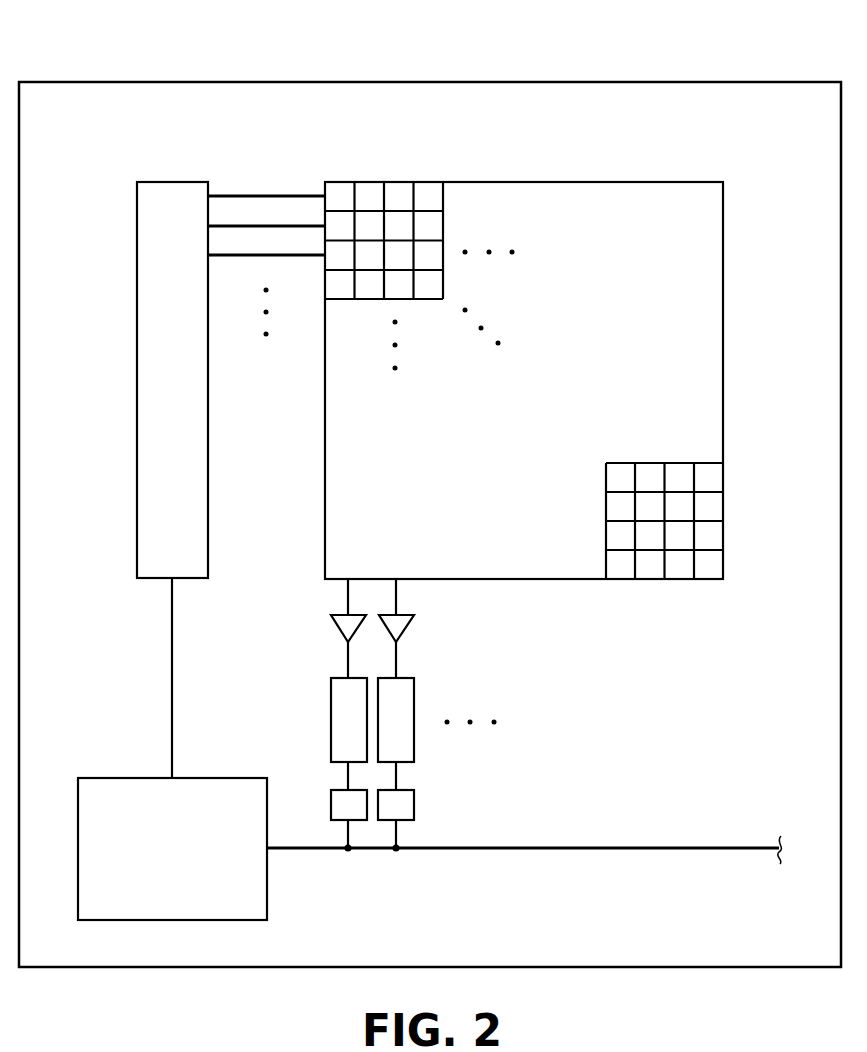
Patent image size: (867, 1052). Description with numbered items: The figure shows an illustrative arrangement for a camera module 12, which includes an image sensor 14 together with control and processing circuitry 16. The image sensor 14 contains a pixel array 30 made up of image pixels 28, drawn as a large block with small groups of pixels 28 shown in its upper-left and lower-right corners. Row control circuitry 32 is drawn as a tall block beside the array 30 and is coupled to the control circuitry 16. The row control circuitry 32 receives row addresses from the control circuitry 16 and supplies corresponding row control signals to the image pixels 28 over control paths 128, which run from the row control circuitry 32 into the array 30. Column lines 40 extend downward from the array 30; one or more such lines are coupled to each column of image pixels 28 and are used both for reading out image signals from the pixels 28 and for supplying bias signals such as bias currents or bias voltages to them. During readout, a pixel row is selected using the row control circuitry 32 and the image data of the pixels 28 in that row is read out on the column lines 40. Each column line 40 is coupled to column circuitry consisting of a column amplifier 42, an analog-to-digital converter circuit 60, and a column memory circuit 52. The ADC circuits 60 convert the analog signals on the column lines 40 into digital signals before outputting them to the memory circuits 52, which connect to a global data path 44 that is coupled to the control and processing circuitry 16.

The camera module 12 is at (249, 90).
The image sensor 14 is at (176, 134).
The control and processing circuitry 16 is at (114, 787).
The image pixels 28 is at (400, 228).
The pixel array 30 is at (679, 169).
The row control circuitry 32 is at (143, 240).
The column lines 40 is at (348, 597).
The column amplifier 42 is at (341, 630).
The global data path 44 is at (628, 851).
The column memory circuit 52 is at (331, 805).
The analog-to-digital converter circuit 60 is at (331, 698).
The control paths 128 is at (278, 196).